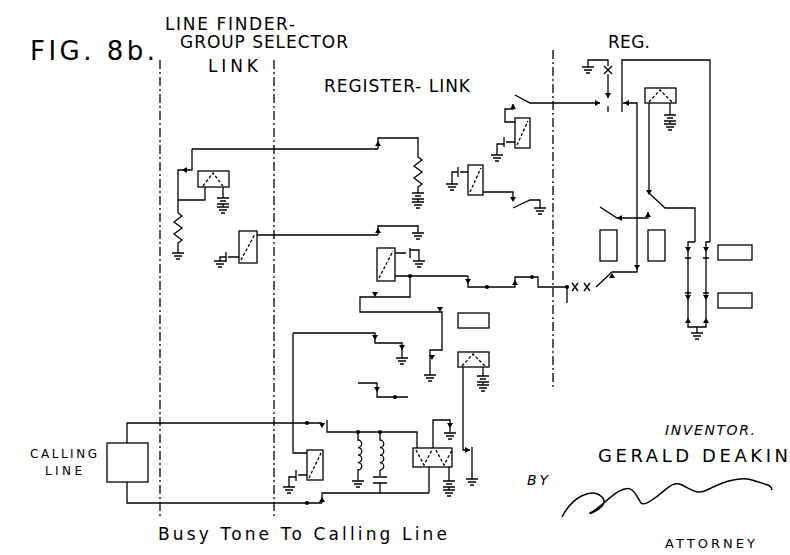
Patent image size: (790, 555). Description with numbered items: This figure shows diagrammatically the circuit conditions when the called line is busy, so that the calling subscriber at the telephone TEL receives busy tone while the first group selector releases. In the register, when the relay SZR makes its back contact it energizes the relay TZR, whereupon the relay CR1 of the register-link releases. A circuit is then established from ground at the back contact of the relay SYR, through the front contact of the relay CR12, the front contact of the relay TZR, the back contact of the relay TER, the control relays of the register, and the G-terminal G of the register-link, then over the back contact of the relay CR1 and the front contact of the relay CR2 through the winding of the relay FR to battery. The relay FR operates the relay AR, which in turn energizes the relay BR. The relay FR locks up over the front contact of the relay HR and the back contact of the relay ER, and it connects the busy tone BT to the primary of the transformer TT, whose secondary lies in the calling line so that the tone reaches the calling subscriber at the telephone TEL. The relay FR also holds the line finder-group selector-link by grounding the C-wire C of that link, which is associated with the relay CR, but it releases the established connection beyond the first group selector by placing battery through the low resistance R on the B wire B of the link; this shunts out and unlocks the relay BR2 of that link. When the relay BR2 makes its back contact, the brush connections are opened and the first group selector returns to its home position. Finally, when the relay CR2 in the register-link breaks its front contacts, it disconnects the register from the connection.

The calling subscriber telephone TEL is at (127, 462).
The B wire B is at (318, 147).
The BR2-relay BR2 is at (219, 181).
The low resistance R is at (298, 198).
The CR relay CR is at (235, 258).
The C-wire C is at (328, 233).
The FR relay FR is at (410, 264).
The G-terminal G is at (567, 307).
The ER relay ER is at (473, 312).
The HR relay HR is at (473, 410).
The busy tone BT is at (392, 394).
The transformer TT is at (376, 459).
The BR relay BR is at (420, 451).
The AR relay AR is at (314, 471).
The CR1 relay CR1 is at (504, 132).
The CR2 relay CR2 is at (496, 189).
The TZR relay TZR is at (669, 156).
The TER relay TER is at (591, 245).
The SZR relay SZR is at (654, 255).
The CR12 relay CR12 is at (735, 244).
The SYR relay SYR is at (735, 293).